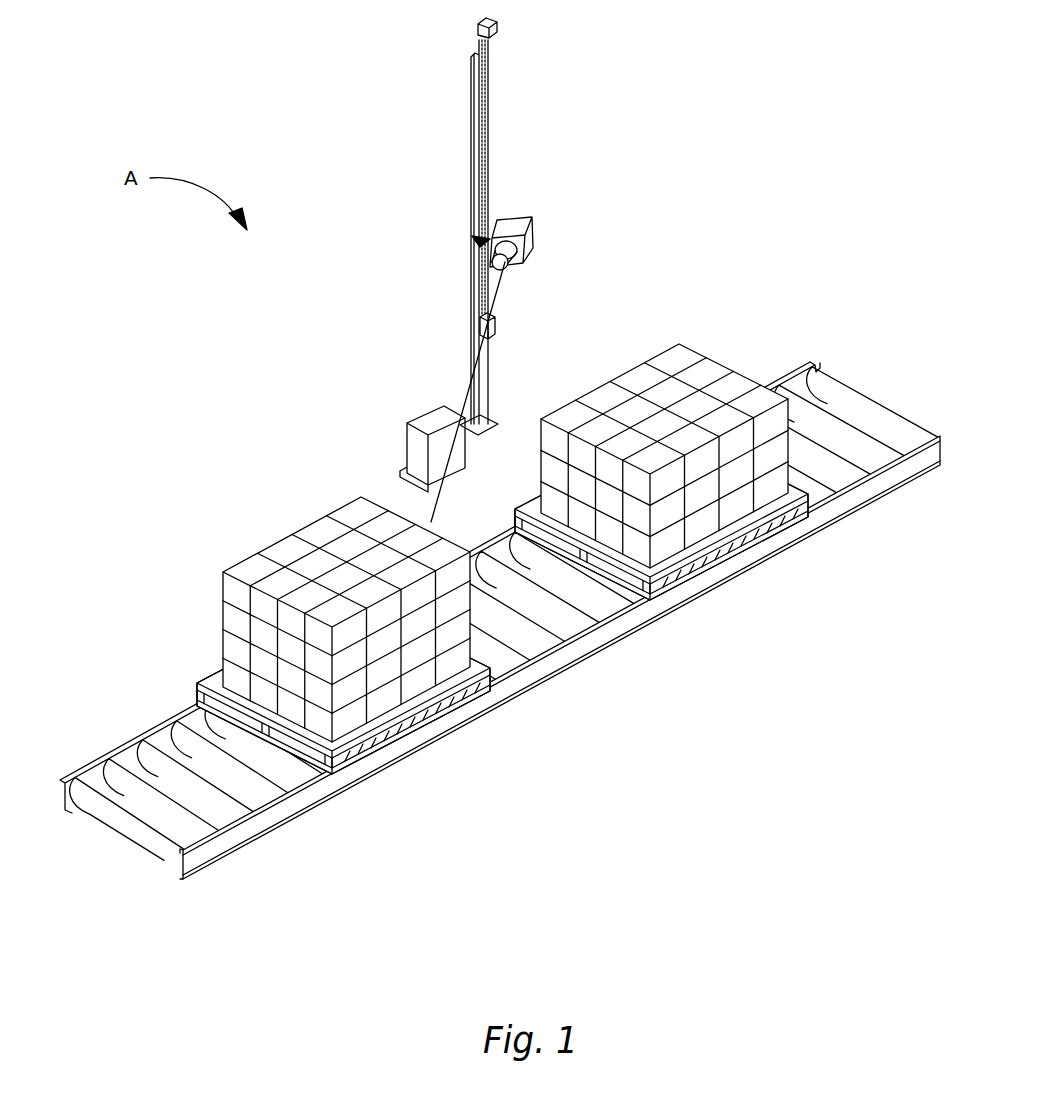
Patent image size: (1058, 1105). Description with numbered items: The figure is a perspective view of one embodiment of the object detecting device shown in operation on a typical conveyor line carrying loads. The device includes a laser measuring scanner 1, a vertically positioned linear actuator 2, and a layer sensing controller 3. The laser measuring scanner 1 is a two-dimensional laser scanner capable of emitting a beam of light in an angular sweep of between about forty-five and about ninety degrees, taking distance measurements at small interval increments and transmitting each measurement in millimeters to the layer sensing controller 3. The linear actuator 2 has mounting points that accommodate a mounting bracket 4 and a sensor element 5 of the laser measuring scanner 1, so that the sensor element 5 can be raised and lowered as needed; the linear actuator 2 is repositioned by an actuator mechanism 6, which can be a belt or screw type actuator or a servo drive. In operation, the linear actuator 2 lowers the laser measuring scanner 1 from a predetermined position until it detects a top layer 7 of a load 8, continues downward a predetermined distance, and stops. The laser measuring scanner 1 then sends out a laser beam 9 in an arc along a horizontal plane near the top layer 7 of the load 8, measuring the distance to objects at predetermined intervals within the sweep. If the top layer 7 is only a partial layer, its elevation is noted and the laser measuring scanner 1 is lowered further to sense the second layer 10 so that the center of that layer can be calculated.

The laser measuring scanner 1 is at (520, 216).
The linear actuator 2 is at (472, 100).
The layer sensing controller 3 is at (443, 428).
The mounting bracket 4 is at (478, 240).
The sensor element 5 is at (512, 262).
The actuator mechanism 6 is at (486, 22).
The top layer 7 is at (371, 650).
The load 8 is at (636, 565).
The laser beam 9 is at (430, 520).
The second layer 10 is at (415, 625).